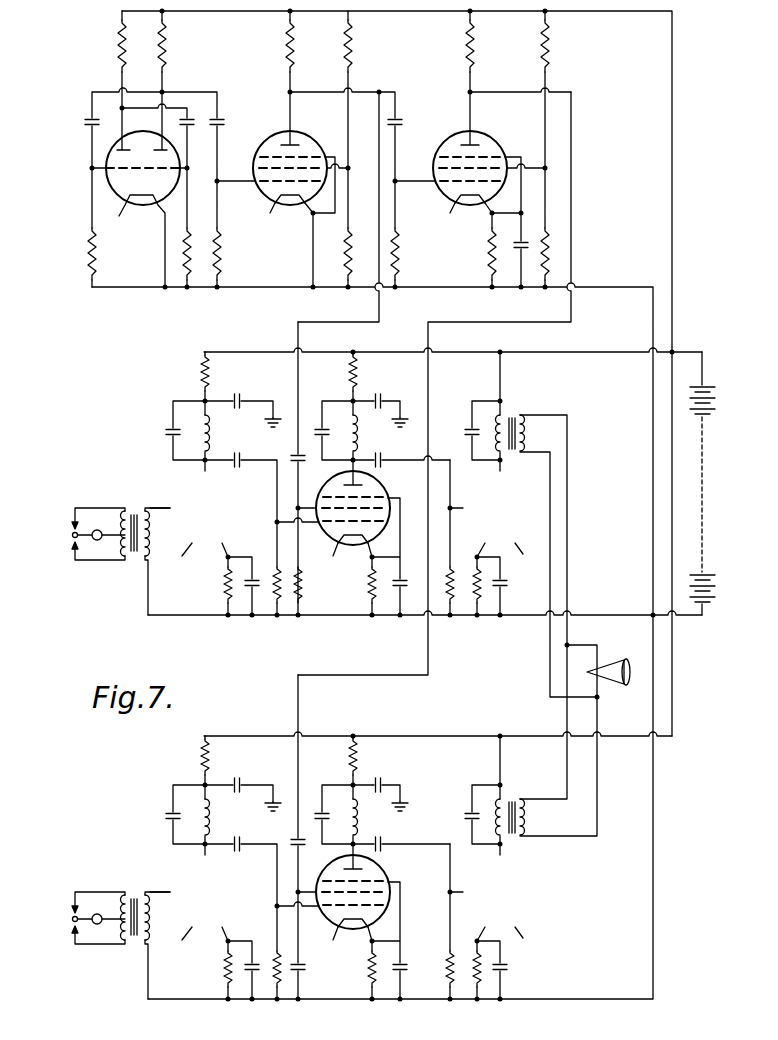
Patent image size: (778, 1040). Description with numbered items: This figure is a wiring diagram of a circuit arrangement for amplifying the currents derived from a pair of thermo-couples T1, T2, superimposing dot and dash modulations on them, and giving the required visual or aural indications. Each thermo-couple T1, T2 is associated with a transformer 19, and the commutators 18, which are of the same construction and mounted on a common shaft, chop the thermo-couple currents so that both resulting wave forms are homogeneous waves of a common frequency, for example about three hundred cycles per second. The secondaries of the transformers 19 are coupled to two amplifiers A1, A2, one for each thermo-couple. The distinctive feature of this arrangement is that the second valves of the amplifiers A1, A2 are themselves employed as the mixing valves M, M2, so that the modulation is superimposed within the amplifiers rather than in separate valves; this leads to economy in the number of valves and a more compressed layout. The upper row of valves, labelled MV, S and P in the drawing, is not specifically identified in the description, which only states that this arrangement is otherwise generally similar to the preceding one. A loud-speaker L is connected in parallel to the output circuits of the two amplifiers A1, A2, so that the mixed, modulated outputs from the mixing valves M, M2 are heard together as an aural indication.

The master oscillator vacuum tube MV is at (142, 207).
The separator tube S is at (271, 206).
The phase control tube P is at (452, 206).
The amplifier A1 is at (387, 488).
The amplifier A2 is at (372, 856).
The mixing valve M is at (353, 524).
The mixing valve M2 is at (353, 912).
The thermo-couple T1 is at (100, 530).
The thermo-couple T2 is at (96, 925).
The commutator 18 is at (73, 537).
The transformer 19 is at (134, 556).
The loud-speaker L is at (607, 666).